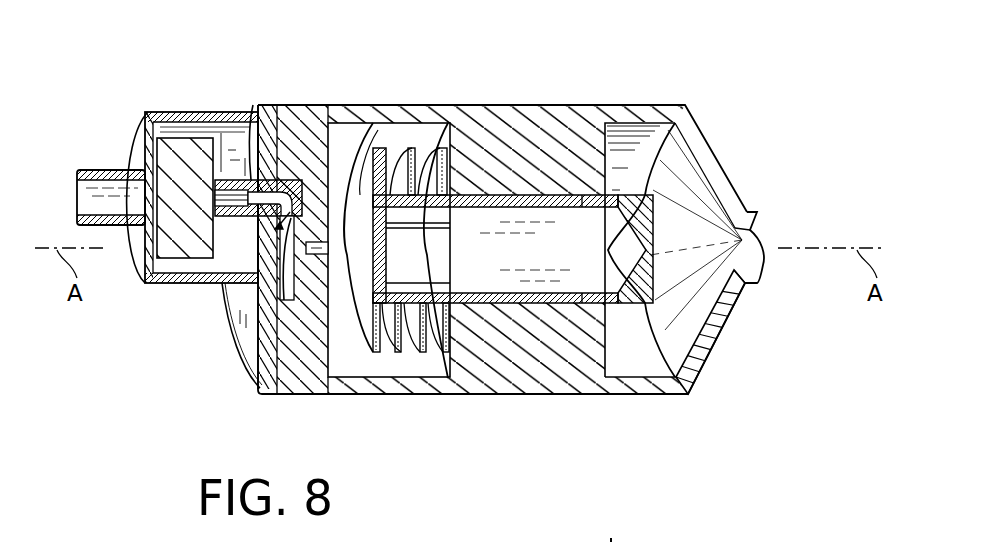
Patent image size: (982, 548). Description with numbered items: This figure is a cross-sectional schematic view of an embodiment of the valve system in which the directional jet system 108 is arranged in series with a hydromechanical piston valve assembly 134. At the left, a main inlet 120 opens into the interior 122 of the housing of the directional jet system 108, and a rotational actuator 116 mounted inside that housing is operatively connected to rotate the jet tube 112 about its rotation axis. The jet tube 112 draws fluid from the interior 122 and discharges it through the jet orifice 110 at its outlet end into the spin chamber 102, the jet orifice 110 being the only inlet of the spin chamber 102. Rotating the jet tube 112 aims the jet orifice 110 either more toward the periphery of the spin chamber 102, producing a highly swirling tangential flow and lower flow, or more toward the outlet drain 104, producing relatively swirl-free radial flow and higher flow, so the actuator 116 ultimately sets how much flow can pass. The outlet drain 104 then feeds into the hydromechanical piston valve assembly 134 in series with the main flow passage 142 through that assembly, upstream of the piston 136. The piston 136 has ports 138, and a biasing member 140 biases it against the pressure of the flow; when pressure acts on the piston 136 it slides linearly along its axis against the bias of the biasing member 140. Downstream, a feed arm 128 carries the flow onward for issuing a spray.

The spin chamber 102 is at (290, 305).
The outlet drain 104 is at (322, 242).
The directional jet system 108 is at (134, 317).
The jet orifice 110 is at (158, 108).
The jet tube 112 is at (317, 103).
The rotational actuator 116 is at (178, 153).
The main inlet 120 is at (82, 170).
The interior 122 is at (230, 138).
The feed arm 128 is at (758, 284).
The hydromechanical piston valve assembly 134 is at (565, 422).
The piston 136 is at (655, 206).
The ports 138 is at (580, 292).
The biasing member 140 is at (466, 110).
The main flow passage 142 is at (686, 303).